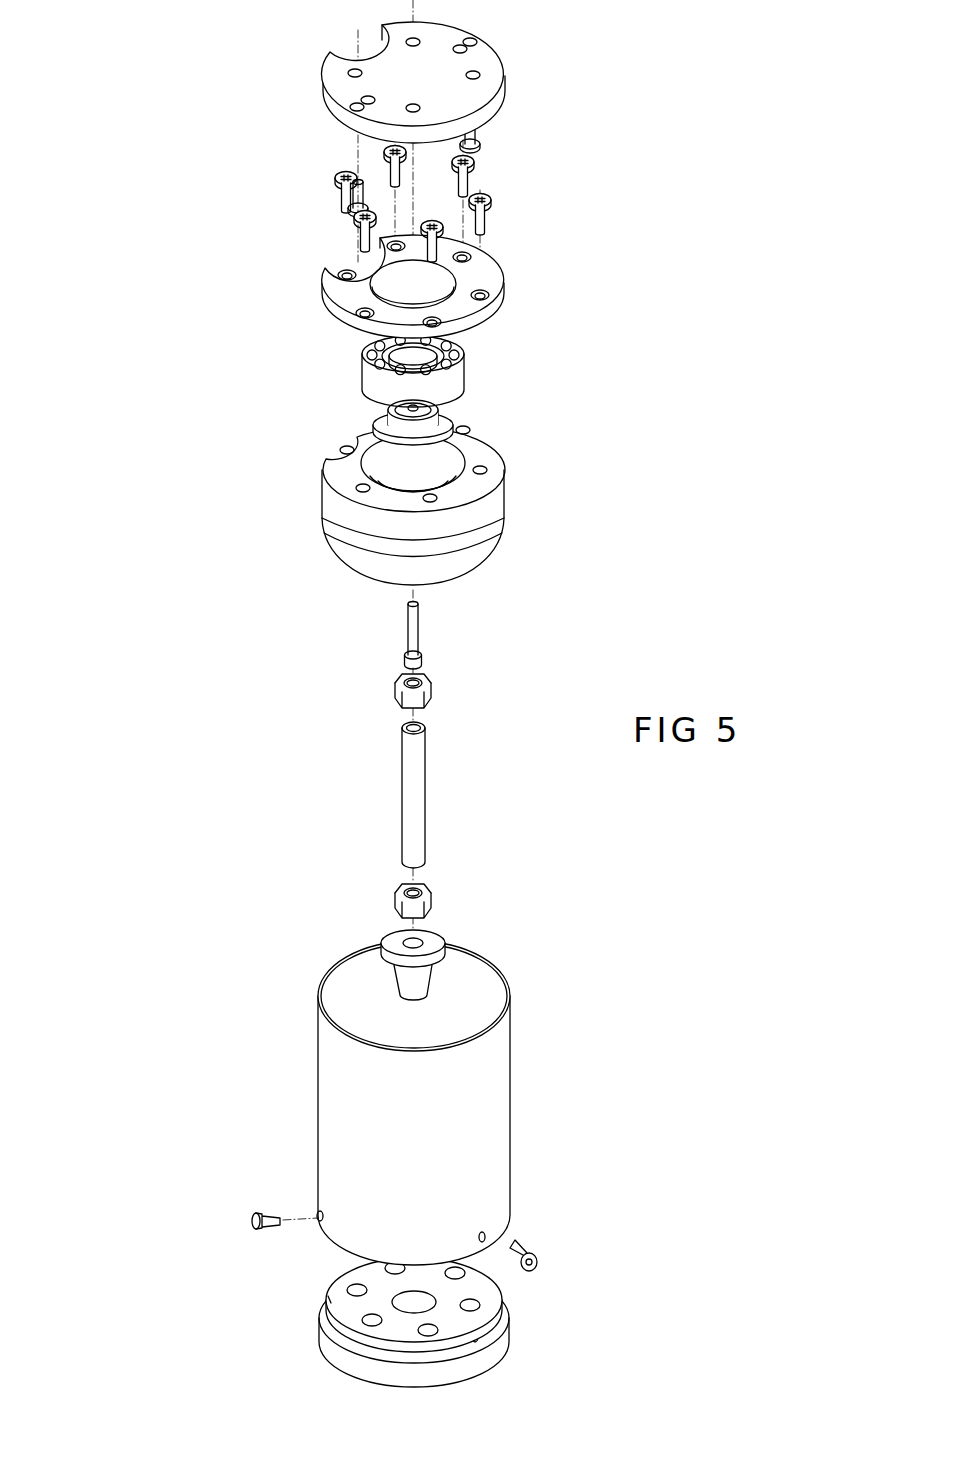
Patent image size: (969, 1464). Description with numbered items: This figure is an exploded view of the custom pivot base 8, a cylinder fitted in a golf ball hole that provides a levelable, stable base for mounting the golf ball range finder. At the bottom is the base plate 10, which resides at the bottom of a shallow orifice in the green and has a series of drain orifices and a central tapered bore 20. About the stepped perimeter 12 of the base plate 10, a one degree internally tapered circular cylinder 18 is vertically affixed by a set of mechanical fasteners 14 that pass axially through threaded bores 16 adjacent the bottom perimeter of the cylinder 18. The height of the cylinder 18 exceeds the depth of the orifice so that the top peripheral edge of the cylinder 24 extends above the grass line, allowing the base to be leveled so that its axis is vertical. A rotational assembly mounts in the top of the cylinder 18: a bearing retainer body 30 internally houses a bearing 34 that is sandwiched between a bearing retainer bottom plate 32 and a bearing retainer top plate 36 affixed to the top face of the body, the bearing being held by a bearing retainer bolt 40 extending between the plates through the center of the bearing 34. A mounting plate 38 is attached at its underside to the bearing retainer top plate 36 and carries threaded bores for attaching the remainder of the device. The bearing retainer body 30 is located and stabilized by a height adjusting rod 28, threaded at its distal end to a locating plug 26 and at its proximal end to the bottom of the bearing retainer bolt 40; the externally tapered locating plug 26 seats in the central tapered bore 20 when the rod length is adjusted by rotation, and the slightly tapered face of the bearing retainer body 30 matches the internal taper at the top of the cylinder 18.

The custom pivot base 8 is at (324, 693).
The base plate 10 is at (457, 1330).
The stepped perimeter 12 is at (366, 1316).
The mechanical fasteners 14 is at (564, 1238).
The threaded bores 16 is at (541, 1191).
The internally tapered circular cylinder 18 is at (463, 1130).
The central tapered bore 20 is at (272, 1258).
The top peripheral edge of the cylinder 24 is at (447, 970).
The locating plug 26 is at (348, 947).
The height adjusting rod 28 is at (457, 795).
The bearing retainer body 30 is at (465, 505).
The bearing retainer bottom plate 32 is at (481, 411).
The bearing 34 is at (480, 364).
The bearing retainer top plate 36 is at (470, 286).
The mounting plate 38 is at (365, 95).
The bearing retainer bolt 40 is at (461, 636).